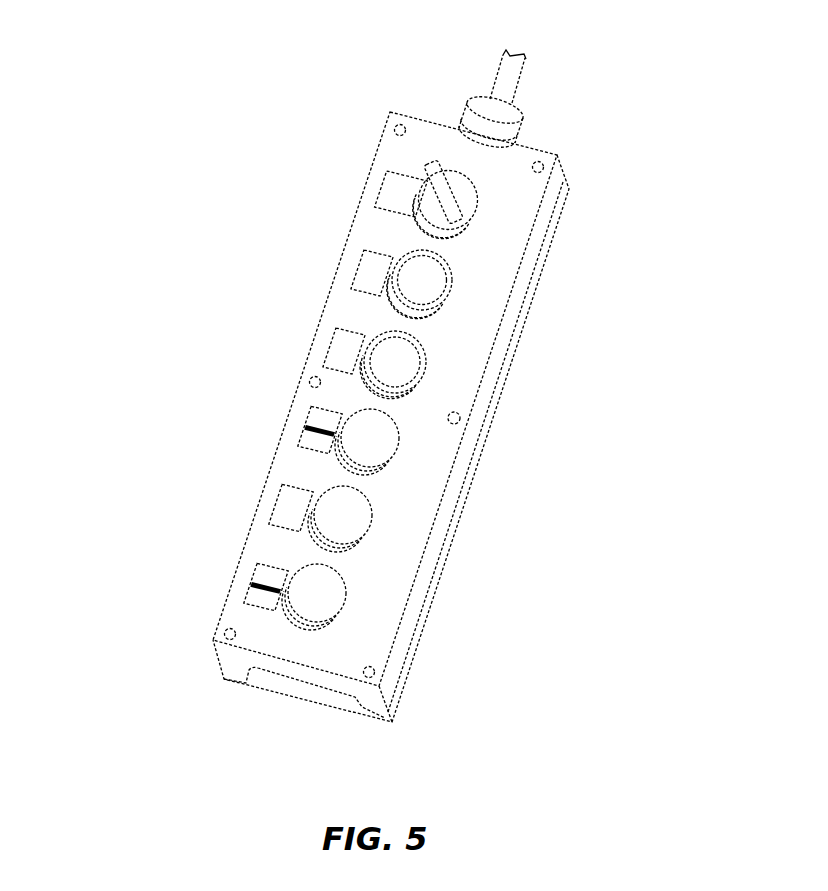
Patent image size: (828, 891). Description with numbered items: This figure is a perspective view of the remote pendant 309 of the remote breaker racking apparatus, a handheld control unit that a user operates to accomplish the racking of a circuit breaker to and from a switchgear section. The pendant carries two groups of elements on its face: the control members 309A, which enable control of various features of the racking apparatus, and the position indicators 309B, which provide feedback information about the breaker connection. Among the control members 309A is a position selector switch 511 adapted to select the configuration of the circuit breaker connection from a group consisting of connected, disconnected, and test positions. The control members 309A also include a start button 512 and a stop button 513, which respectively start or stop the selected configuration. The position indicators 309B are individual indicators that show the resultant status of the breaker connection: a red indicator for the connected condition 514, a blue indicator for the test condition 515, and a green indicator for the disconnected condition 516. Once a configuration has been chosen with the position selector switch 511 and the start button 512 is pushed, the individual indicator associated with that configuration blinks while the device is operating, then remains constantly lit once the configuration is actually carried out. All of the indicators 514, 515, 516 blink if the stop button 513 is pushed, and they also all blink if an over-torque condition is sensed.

The remote pendant 309 is at (388, 96).
The control members 309A is at (367, 147).
The position indicators 309B is at (283, 382).
The position selector switch 511 is at (477, 213).
The start button 512 is at (449, 297).
The stop button 513 is at (427, 372).
The connected condition indicator 514 is at (396, 450).
The test condition indicator 515 is at (371, 533).
The disconnected condition indicator 516 is at (338, 607).